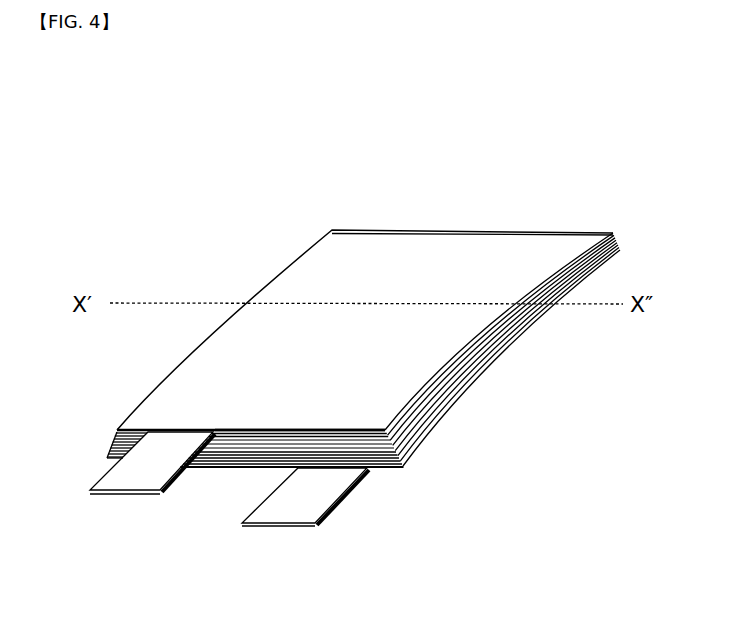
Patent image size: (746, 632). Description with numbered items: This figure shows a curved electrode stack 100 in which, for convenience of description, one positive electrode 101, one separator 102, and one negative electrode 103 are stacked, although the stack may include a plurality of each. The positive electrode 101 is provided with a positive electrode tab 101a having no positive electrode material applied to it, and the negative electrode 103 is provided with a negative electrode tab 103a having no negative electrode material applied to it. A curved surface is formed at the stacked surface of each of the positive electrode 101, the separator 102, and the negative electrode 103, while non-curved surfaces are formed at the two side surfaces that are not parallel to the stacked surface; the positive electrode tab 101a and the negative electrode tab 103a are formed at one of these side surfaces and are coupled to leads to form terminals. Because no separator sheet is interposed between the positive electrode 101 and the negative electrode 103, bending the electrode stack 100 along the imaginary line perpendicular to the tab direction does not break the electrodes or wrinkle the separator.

The curved electrode stack 100 is at (251, 304).
The positive electrode 101 is at (341, 492).
The positive electrode tab 101a is at (305, 543).
The separator 102 is at (445, 313).
The negative electrode 103 is at (363, 309).
The negative electrode tab 103a is at (152, 515).